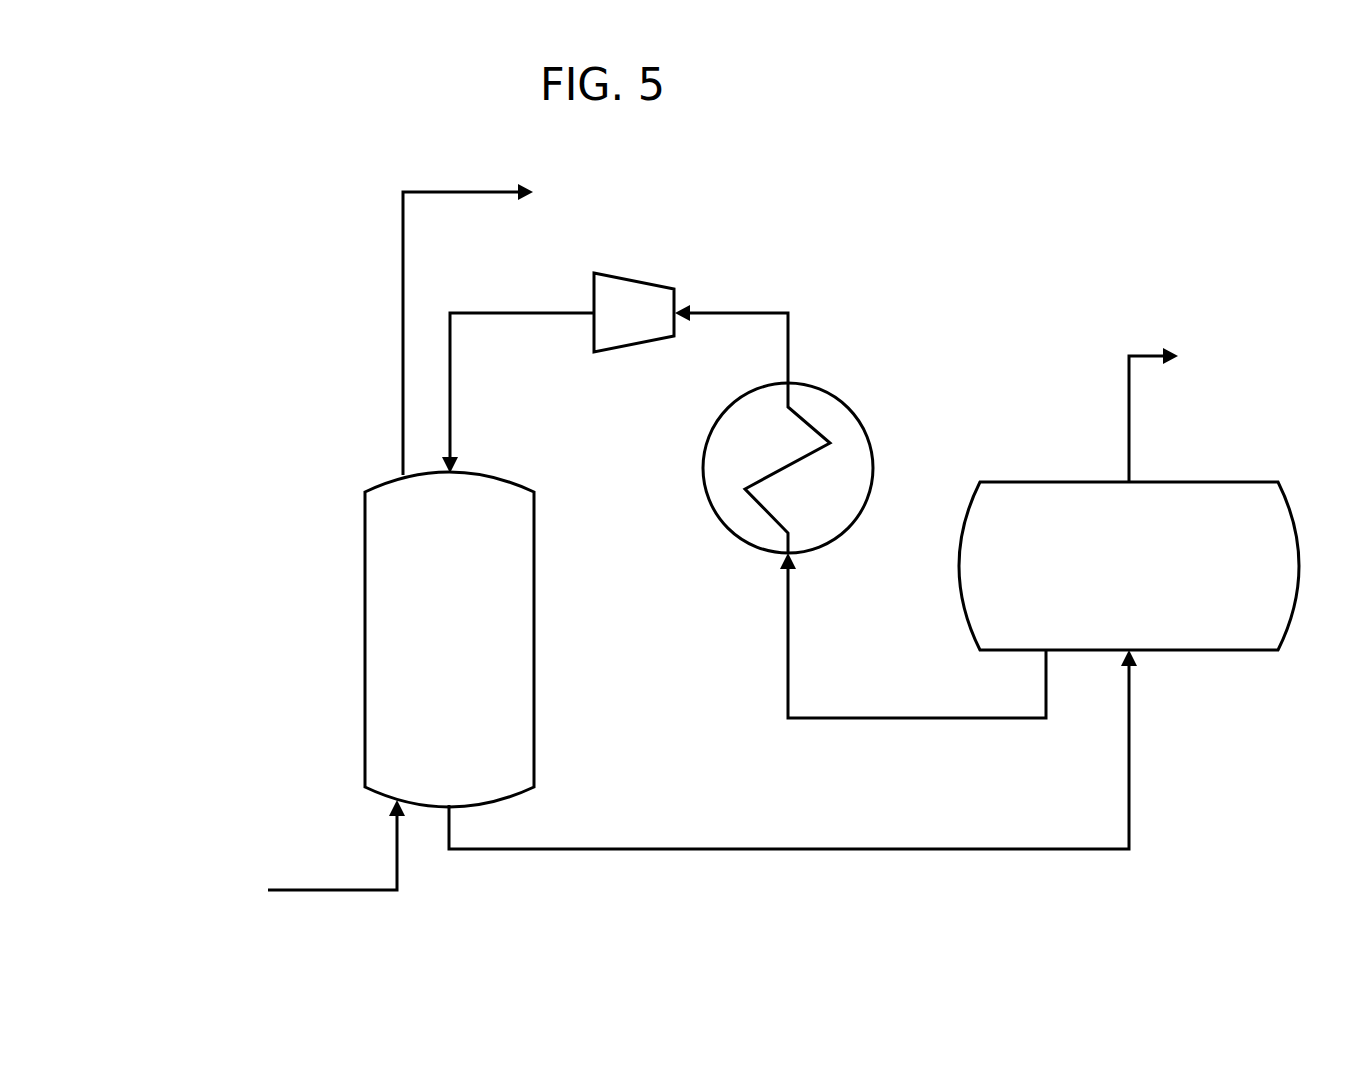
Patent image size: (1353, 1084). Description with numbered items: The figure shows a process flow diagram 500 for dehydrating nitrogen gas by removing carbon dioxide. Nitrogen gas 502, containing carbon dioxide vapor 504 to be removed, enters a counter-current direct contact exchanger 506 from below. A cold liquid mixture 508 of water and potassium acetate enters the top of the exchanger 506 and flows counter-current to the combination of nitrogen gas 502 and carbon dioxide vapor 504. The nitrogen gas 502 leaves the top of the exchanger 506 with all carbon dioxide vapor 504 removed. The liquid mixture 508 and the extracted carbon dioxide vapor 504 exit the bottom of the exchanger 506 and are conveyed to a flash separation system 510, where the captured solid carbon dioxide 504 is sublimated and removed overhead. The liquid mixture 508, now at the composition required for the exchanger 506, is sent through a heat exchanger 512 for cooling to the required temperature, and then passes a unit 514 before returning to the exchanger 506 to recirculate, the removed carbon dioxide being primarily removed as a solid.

The process flow diagram 500 is at (722, 543).
The nitrogen gas 502 is at (499, 328).
The carbon dioxide vapor 504 is at (1186, 412).
The counter-current direct contact exchanger 506 is at (449, 639).
The liquid mixture 508 is at (744, 499).
The flash separation system 510 is at (1129, 566).
The heat exchanger 512 is at (754, 468).
The compressor 514 is at (634, 312).